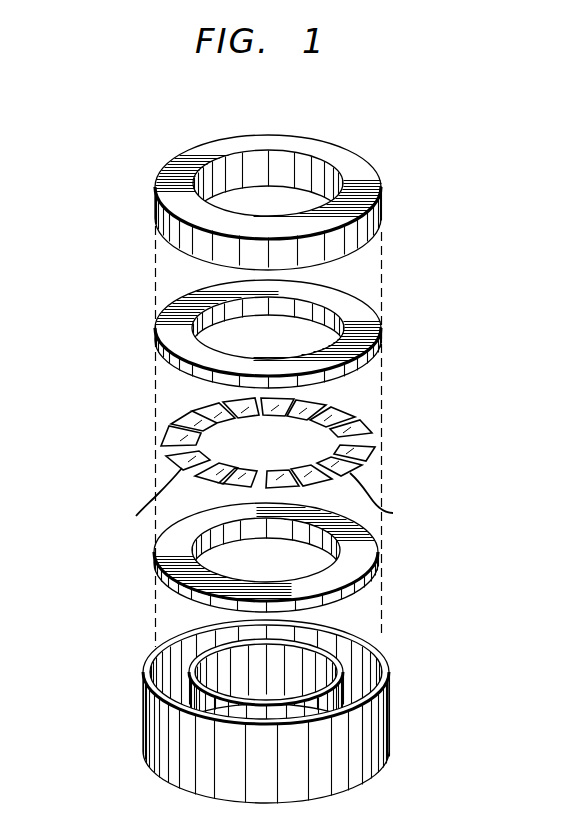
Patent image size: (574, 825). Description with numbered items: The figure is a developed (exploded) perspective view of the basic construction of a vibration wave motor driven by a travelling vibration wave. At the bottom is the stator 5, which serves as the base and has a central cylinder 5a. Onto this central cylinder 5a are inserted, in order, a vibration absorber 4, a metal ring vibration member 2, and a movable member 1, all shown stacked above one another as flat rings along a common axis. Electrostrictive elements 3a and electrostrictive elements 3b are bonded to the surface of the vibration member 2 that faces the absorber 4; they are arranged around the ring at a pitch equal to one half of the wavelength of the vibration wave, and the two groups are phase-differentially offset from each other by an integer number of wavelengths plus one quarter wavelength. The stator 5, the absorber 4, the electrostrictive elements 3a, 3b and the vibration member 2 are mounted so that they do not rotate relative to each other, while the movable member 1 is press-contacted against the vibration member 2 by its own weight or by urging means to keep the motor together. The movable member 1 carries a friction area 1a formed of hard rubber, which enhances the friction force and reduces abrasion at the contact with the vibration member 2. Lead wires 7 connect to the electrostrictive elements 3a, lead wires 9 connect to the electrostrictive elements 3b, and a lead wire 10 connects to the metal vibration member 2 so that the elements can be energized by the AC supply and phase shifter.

The movable member 1 is at (367, 184).
The friction area 1a is at (375, 239).
The metal ring vibration member 2 is at (363, 325).
The lead wire 10 is at (376, 358).
The electrostrictive elements 3a is at (280, 477).
The electrostrictive elements 3b is at (242, 476).
The lead wires 9 is at (136, 516).
The lead wires 7 is at (391, 512).
The vibration absorber 4 is at (367, 553).
The stator 5 is at (290, 705).
The central cylinder 5a is at (333, 700).